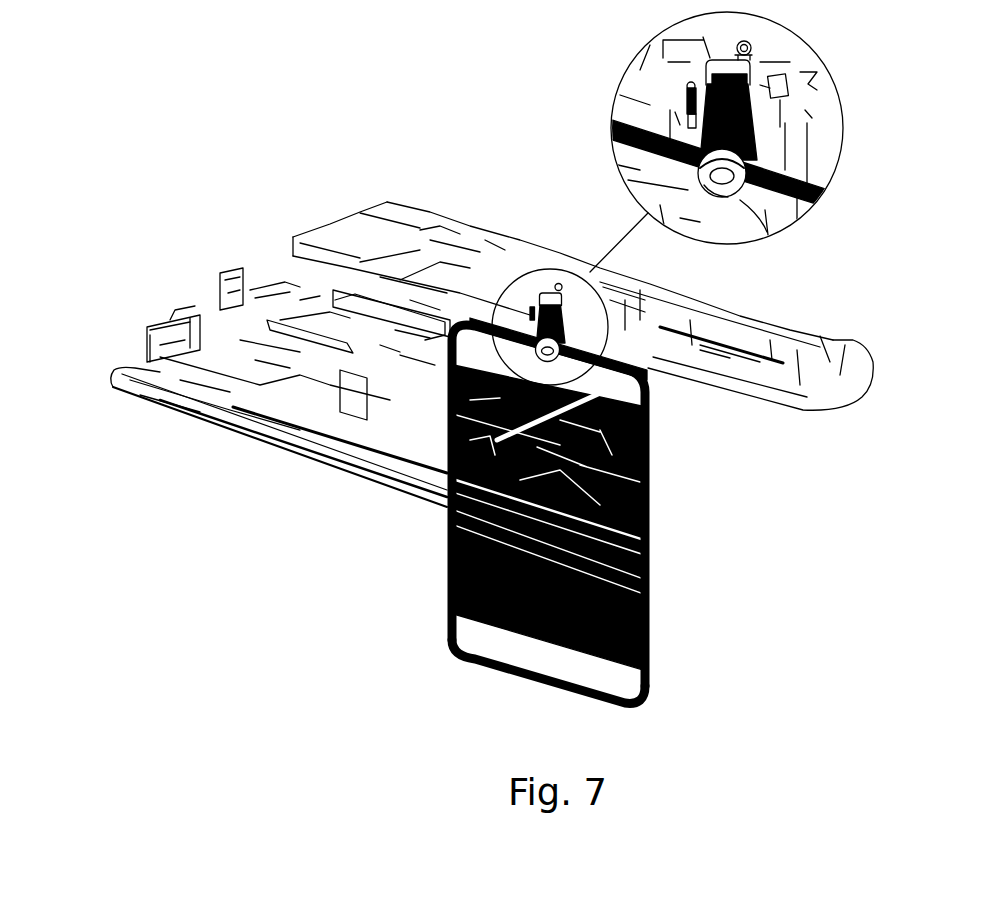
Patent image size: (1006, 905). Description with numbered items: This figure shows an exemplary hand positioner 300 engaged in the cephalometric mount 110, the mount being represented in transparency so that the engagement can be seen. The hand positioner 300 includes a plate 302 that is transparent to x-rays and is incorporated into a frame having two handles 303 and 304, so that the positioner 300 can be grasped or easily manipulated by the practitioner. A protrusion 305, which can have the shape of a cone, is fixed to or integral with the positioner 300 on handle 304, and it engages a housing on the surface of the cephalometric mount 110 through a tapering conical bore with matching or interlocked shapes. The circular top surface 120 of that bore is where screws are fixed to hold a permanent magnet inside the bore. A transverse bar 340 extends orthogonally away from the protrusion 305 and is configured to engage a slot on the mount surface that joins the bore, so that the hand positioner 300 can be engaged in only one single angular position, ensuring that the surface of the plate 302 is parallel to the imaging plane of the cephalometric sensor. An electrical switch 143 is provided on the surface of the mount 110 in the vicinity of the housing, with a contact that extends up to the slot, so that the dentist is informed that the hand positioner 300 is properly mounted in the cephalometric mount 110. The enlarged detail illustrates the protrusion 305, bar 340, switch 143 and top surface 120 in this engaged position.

The cephalometric mount 110 is at (290, 219).
The top surface 120 is at (743, 72).
The electrical switch 143 is at (683, 98).
The hand positioner 300 is at (428, 540).
The plate 302 is at (633, 578).
The handle 303 is at (535, 682).
The handle 304 is at (647, 402).
The protrusion 305 is at (745, 112).
The transverse bar 340 is at (685, 133).